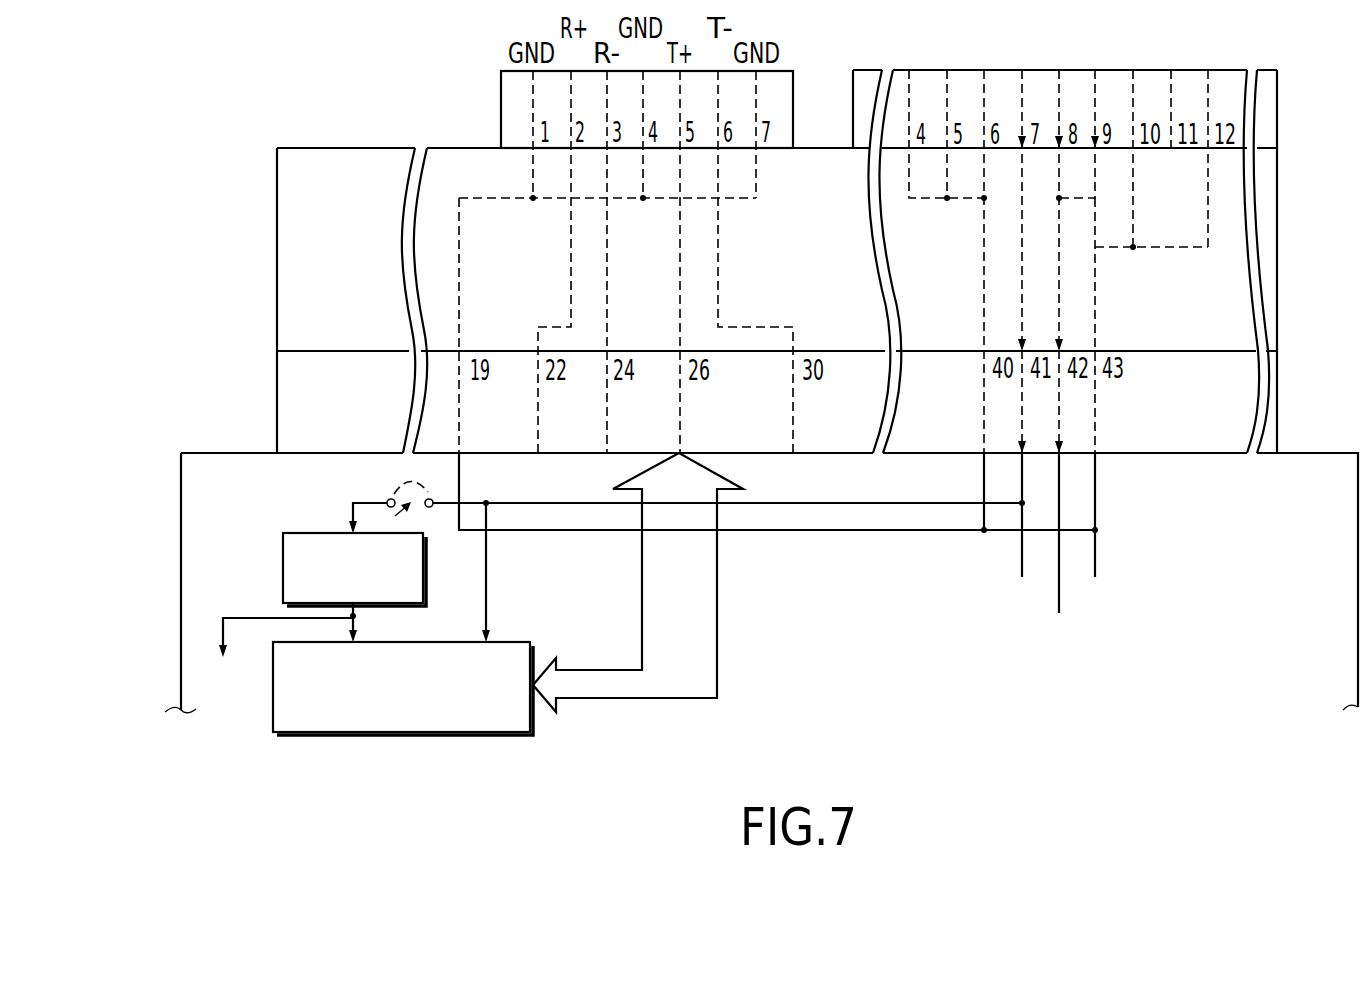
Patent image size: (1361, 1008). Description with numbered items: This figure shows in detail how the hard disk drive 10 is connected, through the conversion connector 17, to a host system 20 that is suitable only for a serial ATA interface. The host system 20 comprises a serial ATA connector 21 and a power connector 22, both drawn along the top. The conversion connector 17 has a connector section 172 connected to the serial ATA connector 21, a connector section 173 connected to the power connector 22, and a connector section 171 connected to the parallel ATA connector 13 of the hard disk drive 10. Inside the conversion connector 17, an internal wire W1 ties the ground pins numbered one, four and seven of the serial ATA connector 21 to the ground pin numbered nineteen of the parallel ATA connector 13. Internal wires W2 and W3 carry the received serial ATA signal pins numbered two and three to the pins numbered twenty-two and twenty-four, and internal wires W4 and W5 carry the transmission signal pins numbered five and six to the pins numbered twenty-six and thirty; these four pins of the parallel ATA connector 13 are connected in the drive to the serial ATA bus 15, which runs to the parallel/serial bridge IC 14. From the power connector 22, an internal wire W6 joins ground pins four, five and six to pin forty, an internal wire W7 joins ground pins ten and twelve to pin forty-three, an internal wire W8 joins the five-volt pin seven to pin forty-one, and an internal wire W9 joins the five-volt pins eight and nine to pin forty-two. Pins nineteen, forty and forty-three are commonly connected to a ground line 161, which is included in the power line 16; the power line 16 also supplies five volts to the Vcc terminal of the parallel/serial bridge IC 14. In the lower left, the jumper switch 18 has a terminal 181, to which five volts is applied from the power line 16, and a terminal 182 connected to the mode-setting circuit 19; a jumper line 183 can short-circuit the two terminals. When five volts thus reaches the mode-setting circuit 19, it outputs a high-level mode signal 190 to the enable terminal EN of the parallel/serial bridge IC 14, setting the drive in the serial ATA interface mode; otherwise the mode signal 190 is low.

The hard disk drive 10 is at (1305, 450).
The parallel ATA connector 13 is at (277, 405).
The parallel/serial bridge IC 14 is at (273, 708).
The serial ATA bus 15 is at (719, 650).
The power line 16 is at (808, 550).
The conversion connector 17 is at (277, 242).
The jumper switch 18 is at (379, 513).
The mode-setting circuit 19 is at (283, 562).
The host system 20 is at (855, 252).
The serial ATA connector 21 is at (501, 118).
The power connector 22 is at (1280, 105).
The ground line 161 is at (1098, 553).
The connector section 171 is at (1186, 350).
The connector section 172 is at (517, 150).
The connector section 173 is at (1148, 150).
The terminal 181 is at (431, 507).
The terminal 182 is at (388, 502).
The jumper line 183 is at (406, 480).
The mode signal 190 is at (358, 612).
The internal wire W1 is at (517, 200).
The internal wire W2 is at (571, 270).
The internal wire W3 is at (607, 262).
The internal wire W4 is at (680, 292).
The internal wire W5 is at (718, 275).
The internal wire W6 is at (984, 230).
The internal wire W7 is at (1095, 293).
The internal wire W8 is at (1022, 272).
The internal wire W9 is at (1059, 222).